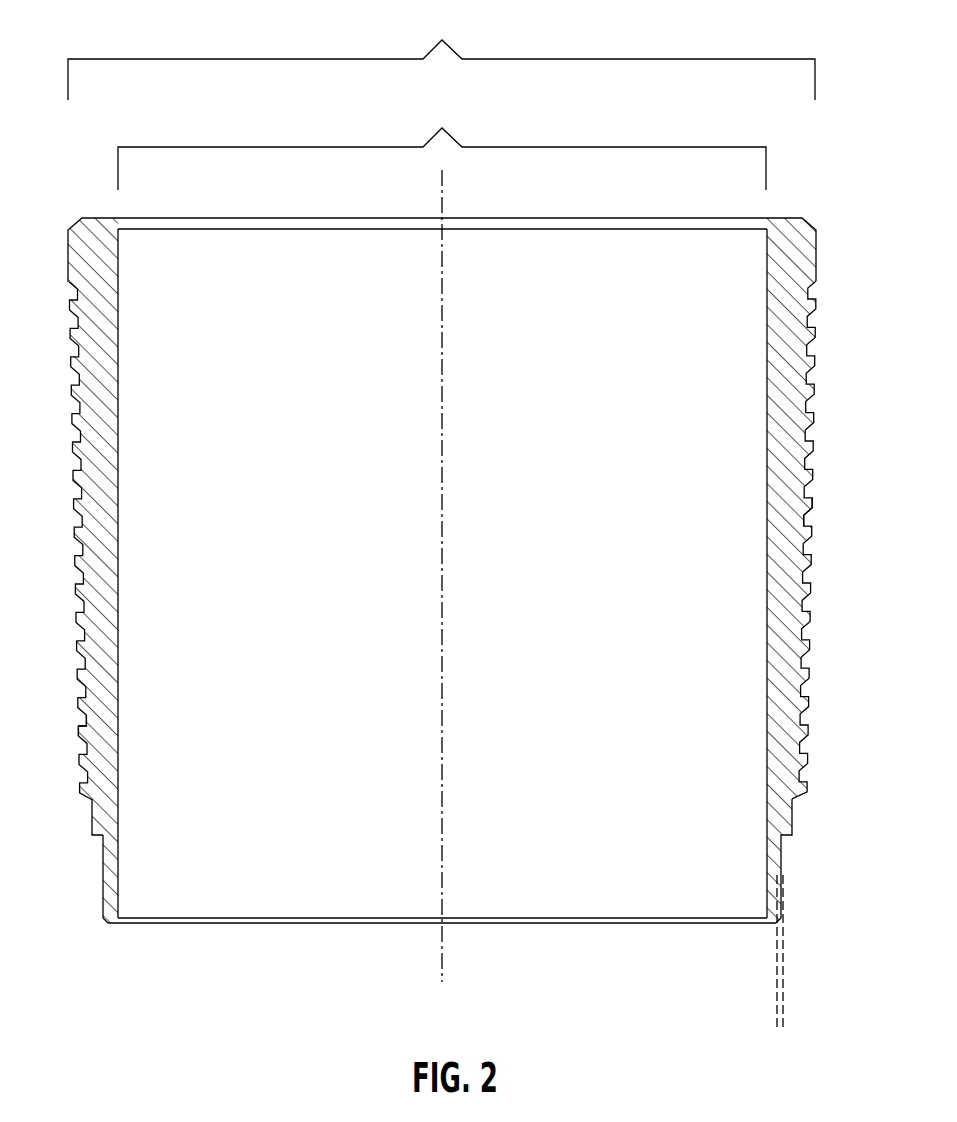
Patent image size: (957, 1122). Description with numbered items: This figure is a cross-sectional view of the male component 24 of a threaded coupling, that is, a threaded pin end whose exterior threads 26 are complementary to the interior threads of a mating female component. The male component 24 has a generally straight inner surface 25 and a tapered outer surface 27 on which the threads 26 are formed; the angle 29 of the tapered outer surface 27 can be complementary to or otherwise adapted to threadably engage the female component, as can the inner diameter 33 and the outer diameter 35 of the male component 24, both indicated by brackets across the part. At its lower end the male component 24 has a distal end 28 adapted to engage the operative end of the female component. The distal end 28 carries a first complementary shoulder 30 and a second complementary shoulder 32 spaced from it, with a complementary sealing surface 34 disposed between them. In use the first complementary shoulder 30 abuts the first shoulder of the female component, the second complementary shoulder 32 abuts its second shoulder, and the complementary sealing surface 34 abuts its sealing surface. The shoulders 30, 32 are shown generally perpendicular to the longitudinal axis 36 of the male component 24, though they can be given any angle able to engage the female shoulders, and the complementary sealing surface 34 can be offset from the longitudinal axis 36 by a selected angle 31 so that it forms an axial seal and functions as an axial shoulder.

The male component 24 is at (790, 607).
The inner surface 25 is at (118, 547).
The exterior threads 26 is at (815, 513).
The tapered outer surface 27 is at (70, 500).
The distal end 28 is at (786, 927).
The angle of the tapered outer surface 29 is at (84, 732).
The first complementary shoulder 30 is at (105, 921).
The selected angle 31 is at (780, 1027).
The second complementary shoulder 32 is at (93, 840).
The inner diameter 33 is at (442, 141).
The complementary sealing surface 34 is at (103, 880).
The outer diameter 35 is at (441, 53).
The longitudinal axis 36 is at (442, 203).